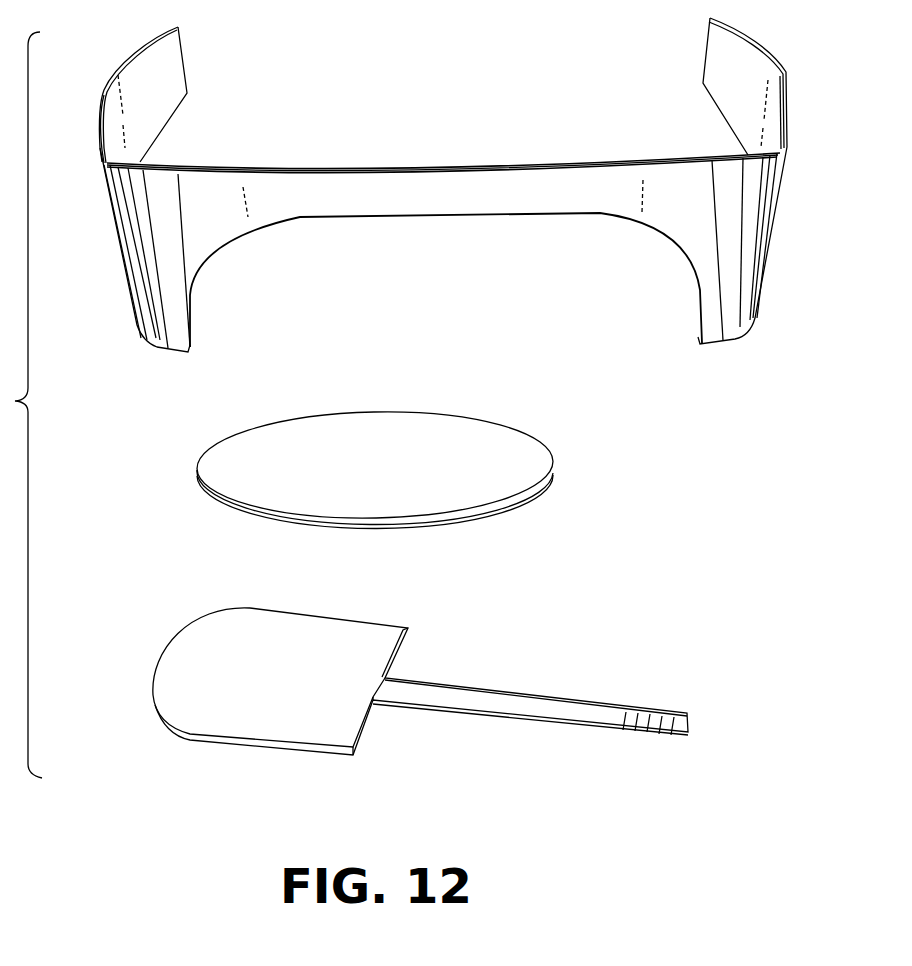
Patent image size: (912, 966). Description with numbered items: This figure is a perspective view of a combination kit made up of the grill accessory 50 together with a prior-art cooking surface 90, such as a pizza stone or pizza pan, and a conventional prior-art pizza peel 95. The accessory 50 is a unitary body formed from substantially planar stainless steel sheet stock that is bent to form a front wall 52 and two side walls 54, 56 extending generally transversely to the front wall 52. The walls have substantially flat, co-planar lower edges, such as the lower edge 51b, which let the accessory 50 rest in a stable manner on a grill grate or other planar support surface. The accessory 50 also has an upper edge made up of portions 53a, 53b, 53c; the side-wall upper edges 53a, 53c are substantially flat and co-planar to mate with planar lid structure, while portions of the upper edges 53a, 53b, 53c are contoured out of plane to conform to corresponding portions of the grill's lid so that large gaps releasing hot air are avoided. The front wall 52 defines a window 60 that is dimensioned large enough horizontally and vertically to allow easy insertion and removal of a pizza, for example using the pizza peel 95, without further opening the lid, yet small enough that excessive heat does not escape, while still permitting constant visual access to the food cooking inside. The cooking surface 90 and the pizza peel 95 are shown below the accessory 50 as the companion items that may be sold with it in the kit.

The accessory 50 is at (800, 213).
The lower edge 51b is at (726, 348).
The front wall 52 is at (162, 323).
The upper edge 53a is at (93, 83).
The upper edge 53b is at (259, 160).
The upper edge 53c is at (797, 72).
The side wall 54 is at (157, 82).
The side wall 56 is at (732, 92).
The window 60 is at (466, 257).
The cooking surface 90 is at (575, 473).
The pizza peel 95 is at (530, 675).